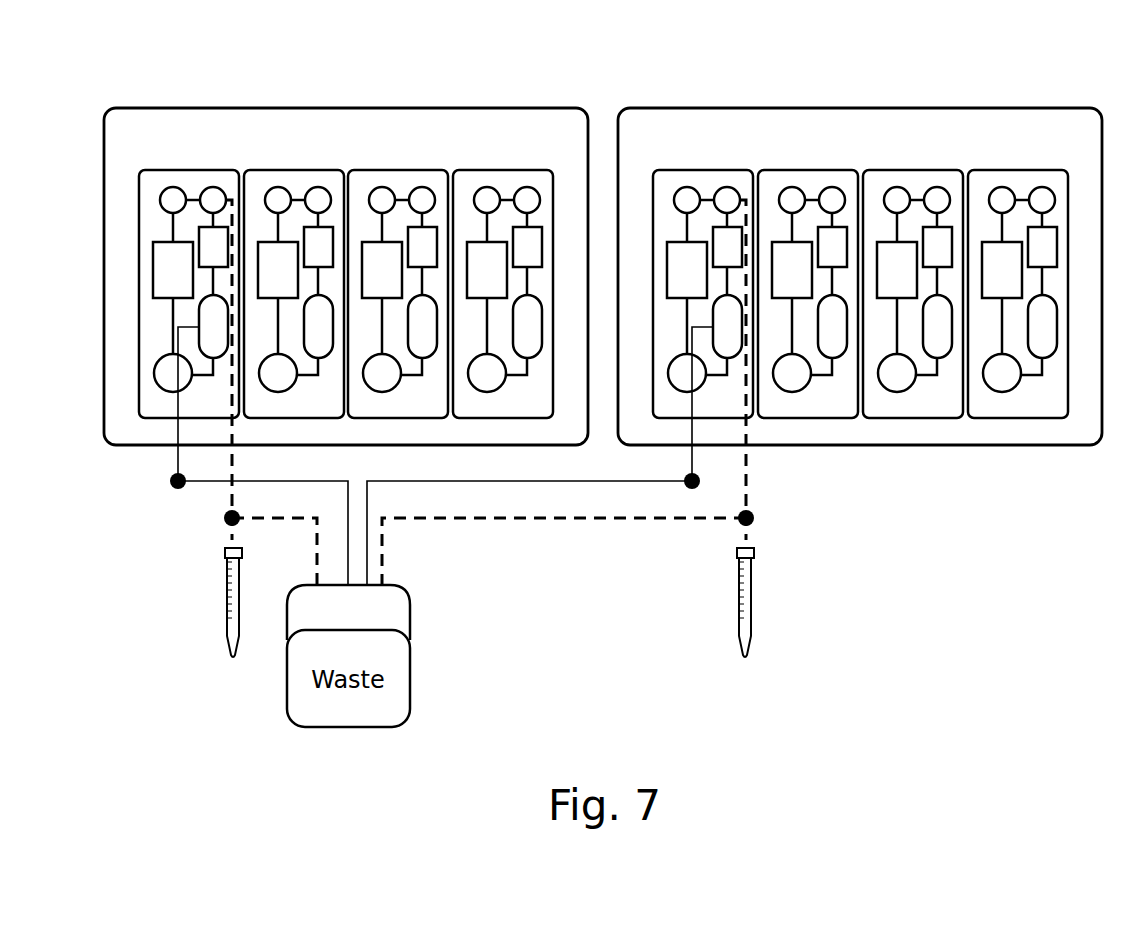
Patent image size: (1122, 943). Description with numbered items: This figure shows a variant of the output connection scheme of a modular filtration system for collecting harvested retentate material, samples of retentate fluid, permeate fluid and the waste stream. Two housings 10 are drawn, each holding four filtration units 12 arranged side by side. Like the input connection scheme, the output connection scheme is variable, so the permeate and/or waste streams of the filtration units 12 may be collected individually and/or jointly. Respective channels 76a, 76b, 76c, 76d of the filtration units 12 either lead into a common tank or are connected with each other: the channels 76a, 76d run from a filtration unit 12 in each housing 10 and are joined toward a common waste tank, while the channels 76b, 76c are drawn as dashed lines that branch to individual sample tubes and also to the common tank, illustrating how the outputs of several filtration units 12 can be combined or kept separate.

The instrument module housing 10 is at (230, 108).
The filtration unit 12 is at (160, 185).
The first fluid line 76a is at (203, 484).
The second fluid line 76b is at (257, 521).
The third fluid line 76c is at (605, 521).
The fourth fluid line 76d is at (500, 484).